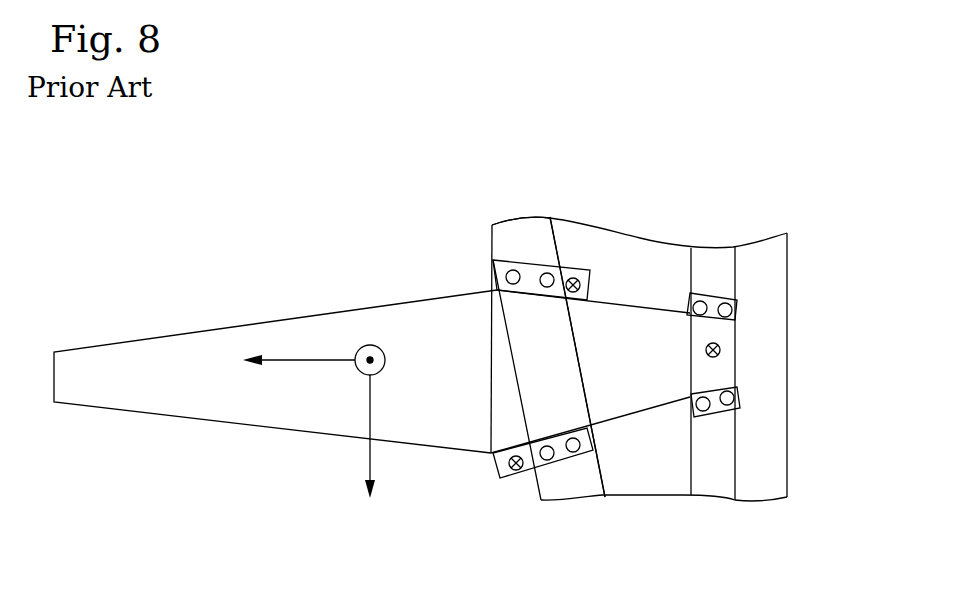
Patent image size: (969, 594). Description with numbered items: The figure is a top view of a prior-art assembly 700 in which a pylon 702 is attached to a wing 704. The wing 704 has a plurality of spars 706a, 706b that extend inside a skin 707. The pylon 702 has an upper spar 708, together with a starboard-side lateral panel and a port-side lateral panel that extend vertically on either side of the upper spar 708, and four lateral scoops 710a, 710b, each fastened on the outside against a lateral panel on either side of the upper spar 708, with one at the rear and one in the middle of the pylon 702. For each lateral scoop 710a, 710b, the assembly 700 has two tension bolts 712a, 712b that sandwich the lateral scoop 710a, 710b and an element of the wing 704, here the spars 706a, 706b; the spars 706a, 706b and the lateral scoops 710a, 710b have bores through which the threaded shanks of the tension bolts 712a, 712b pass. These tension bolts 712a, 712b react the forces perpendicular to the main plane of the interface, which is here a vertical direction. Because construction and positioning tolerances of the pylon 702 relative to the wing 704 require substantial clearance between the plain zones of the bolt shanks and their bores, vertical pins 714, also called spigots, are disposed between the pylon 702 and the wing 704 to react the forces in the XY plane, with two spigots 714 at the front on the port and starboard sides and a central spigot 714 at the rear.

The assembly 700 is at (196, 286).
The pylon 702 is at (152, 400).
The wing 704 is at (777, 310).
The spar 706a is at (520, 227).
The spar 706b is at (717, 272).
The skin 707 is at (773, 420).
The upper spar 708 is at (497, 345).
The lateral scoop 710a is at (502, 477).
The lateral scoop 710b is at (718, 417).
The tension bolt 712a is at (513, 277).
The tension bolt 712b is at (547, 280).
The vertical pin 714 is at (580, 540).